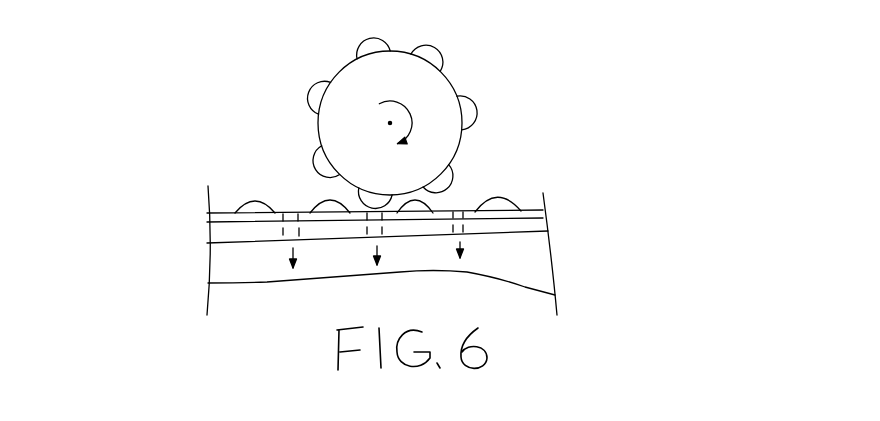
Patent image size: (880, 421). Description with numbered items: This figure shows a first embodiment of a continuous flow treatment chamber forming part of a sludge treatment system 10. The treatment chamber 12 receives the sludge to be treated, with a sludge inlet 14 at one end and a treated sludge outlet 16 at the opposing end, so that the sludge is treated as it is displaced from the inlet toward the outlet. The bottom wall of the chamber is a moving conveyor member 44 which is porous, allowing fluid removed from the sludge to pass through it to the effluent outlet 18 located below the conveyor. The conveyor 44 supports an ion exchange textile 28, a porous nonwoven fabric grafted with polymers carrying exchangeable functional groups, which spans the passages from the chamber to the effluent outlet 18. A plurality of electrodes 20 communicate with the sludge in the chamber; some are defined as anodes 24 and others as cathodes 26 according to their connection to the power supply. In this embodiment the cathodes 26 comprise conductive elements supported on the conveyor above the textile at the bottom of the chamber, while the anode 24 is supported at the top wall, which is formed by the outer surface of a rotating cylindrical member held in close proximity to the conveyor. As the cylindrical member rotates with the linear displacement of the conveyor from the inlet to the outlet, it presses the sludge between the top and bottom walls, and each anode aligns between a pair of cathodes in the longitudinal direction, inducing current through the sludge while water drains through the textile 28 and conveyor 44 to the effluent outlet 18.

The sludge treatment system 10 is at (130, 48).
The treatment chamber 12 is at (478, 182).
The sludge inlet 14 is at (187, 195).
The treated sludge outlet 16 is at (572, 180).
The effluent outlet 18 is at (293, 255).
The electrodes 20 is at (250, 190).
The anode 24 is at (320, 97).
The cathodes 26 is at (320, 207).
The ion exchange textile 28 is at (510, 232).
The moving conveyor member 44 is at (478, 232).